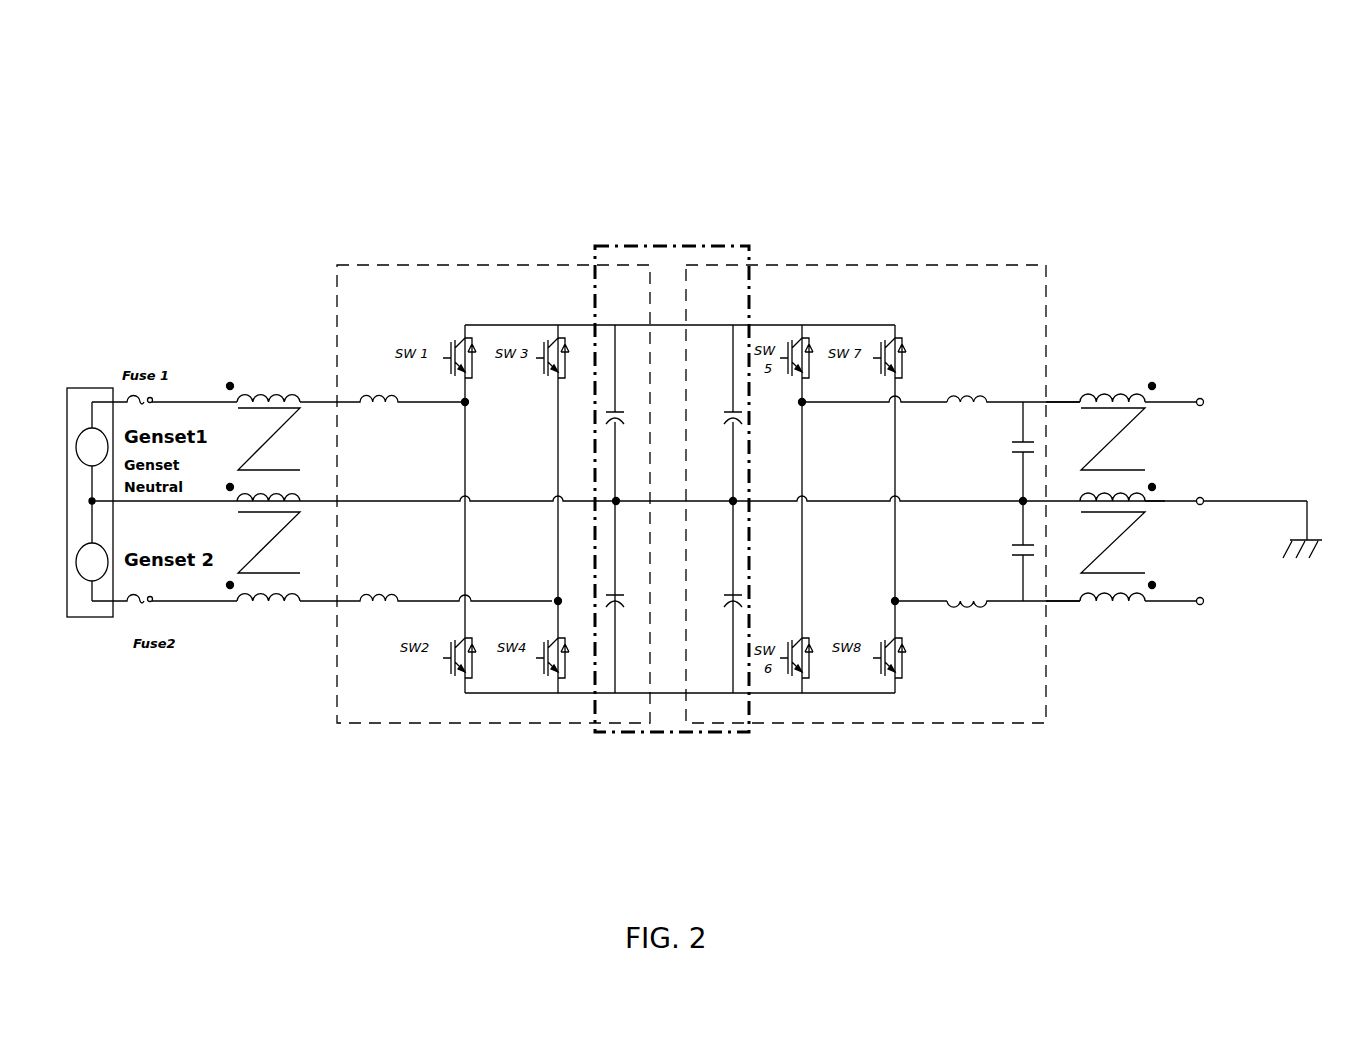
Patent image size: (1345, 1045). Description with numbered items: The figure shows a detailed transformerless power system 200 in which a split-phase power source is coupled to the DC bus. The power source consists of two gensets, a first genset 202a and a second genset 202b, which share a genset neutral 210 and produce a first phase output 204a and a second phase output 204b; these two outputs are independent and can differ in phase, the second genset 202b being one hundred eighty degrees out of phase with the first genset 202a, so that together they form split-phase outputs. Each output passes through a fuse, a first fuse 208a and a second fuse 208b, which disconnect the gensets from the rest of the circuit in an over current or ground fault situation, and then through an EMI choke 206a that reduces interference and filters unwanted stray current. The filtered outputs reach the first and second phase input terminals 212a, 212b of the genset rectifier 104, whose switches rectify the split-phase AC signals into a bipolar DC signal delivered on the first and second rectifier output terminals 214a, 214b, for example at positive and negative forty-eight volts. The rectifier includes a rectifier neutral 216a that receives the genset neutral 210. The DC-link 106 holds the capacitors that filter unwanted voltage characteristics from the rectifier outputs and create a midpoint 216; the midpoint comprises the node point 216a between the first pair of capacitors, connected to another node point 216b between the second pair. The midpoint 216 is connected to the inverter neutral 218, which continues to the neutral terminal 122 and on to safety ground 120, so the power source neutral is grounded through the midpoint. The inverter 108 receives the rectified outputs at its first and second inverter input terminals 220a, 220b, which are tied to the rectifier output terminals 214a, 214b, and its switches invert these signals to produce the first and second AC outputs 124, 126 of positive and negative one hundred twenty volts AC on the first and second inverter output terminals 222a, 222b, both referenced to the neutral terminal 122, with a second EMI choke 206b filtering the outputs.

The transformerless power system 200 is at (161, 77).
The genset 1 202a is at (77, 440).
The genset 2 202b is at (78, 575).
The first phase output 204a is at (113, 388).
The second phase output 204b is at (113, 617).
The EMI choke 206a is at (230, 383).
The EMI choke 206b is at (1139, 400).
The fuse 1 208a is at (150, 400).
The fuse 2 208b is at (150, 602).
The genset neutral 210 is at (100, 503).
The first phase input terminal 212a is at (320, 402).
The second phase input terminal 212b is at (310, 601).
The genset rectifier 104 is at (497, 265).
The first rectifier output terminal 214a is at (580, 325).
The second rectifier output terminal 214b is at (570, 693).
The DC-link 106 is at (705, 246).
The rectifier neutral node point 216a is at (616, 500).
The midpoint 216 is at (663, 500).
The node point 216b is at (733, 503).
The inverter 108 is at (985, 265).
The first inverter input terminal 220a is at (765, 325).
The second inverter input terminal 220b is at (770, 693).
The inverter neutral 218 is at (1020, 485).
The first inverter output terminal 222a is at (1058, 402).
The second inverter output terminal 222b is at (1062, 601).
The first AC output 124 is at (1167, 400).
The second AC output 126 is at (1167, 603).
The neutral terminal 122 is at (1240, 500).
The safety ground 120 is at (1278, 545).